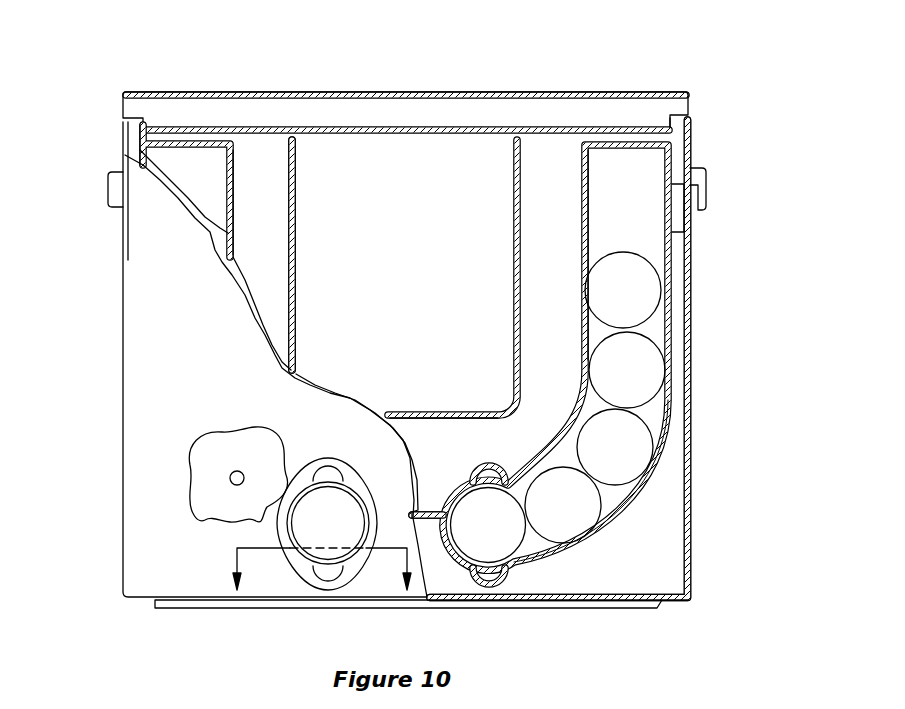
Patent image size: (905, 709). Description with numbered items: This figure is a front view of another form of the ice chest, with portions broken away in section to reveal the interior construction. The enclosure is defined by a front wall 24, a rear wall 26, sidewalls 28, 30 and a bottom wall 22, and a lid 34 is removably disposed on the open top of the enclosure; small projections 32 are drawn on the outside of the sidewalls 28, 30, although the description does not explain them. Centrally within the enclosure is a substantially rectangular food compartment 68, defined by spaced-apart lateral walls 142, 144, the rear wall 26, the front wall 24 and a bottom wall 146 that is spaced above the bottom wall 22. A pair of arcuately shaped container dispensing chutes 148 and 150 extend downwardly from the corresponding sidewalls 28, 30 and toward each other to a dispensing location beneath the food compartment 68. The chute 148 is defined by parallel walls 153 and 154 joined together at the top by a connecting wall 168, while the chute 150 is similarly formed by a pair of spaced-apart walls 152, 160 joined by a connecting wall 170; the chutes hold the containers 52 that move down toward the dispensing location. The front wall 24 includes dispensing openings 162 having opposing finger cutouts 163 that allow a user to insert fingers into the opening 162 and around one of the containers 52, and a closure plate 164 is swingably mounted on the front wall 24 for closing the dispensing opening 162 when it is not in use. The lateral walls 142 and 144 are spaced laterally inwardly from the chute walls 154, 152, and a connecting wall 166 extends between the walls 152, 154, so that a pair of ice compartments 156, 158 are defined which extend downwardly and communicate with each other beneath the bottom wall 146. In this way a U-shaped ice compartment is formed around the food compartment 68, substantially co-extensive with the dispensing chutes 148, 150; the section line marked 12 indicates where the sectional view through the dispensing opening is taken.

The lid 34 is at (395, 92).
The ice compartment 156 is at (263, 157).
The ice compartment 158 is at (550, 160).
The food compartment 68 is at (440, 175).
The connecting wall 170 is at (647, 142).
The connecting wall 168 is at (172, 143).
The container dispensing chute 148 is at (215, 151).
The chute wall 154 is at (234, 207).
The chute wall 153 is at (142, 147).
The sidewall 28 is at (120, 330).
The sidewall 30 is at (690, 278).
The bottom wall 22 is at (620, 601).
The mounting lugs 32 is at (108, 190).
The lateral wall 142 is at (297, 256).
The rear wall 26 is at (396, 218).
The front wall 24 is at (202, 392).
The lateral wall 144 is at (513, 263).
The bottom wall 146 is at (433, 410).
The container dispensing chute 150 is at (620, 170).
The chute wall 152 is at (586, 215).
The chute wall 160 is at (640, 492).
The connecting wall 166 is at (433, 511).
The container 52 is at (494, 535).
The finger cutout 163 is at (328, 472).
The dispensing opening 162 is at (297, 568).
The section line 12- 12 is at (322, 571).
The closure plate 164 is at (185, 502).